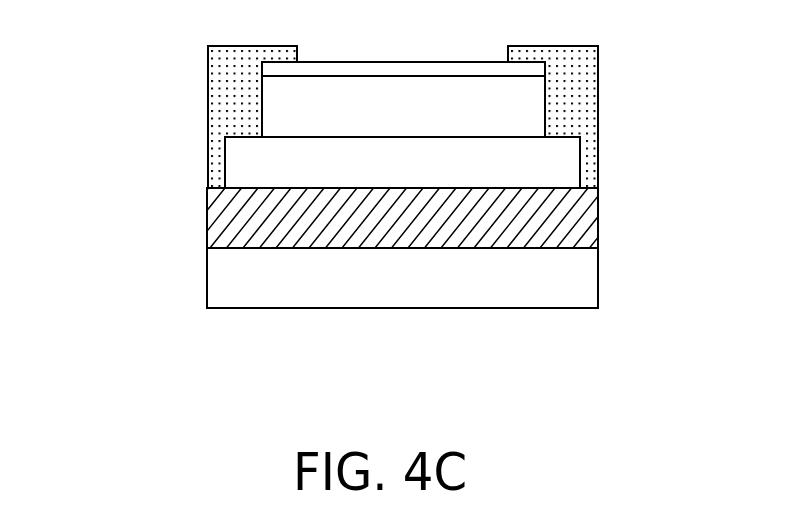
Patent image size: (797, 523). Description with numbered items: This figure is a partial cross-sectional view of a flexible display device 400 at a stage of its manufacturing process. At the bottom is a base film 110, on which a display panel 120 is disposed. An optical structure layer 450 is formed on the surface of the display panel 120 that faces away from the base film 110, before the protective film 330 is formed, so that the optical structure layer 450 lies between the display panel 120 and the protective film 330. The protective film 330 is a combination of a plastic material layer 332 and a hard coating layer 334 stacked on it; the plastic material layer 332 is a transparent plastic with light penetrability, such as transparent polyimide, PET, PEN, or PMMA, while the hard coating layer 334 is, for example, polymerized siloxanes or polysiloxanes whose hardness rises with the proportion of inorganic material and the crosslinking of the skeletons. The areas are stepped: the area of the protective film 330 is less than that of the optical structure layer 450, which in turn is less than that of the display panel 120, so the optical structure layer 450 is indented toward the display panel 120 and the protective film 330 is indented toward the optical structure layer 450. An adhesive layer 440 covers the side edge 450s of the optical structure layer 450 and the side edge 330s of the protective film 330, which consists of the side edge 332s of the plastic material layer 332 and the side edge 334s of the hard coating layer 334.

The base film 110 is at (585, 287).
The display panel 120 is at (592, 217).
The protective film 330 is at (501, 87).
The side edge of protective film 330s is at (153, 87).
The plastic material layer 332 is at (528, 108).
The side edge of plastic material layer 332s is at (261, 106).
The hard coating layer 334 is at (533, 71).
The side edge of hard coating layer 334s is at (261, 69).
The flexible display device 400 is at (392, 232).
The adhesive layer 440 is at (582, 127).
The optical structure layer 450 is at (568, 178).
The side edge of optical structure layer 450s is at (224, 162).